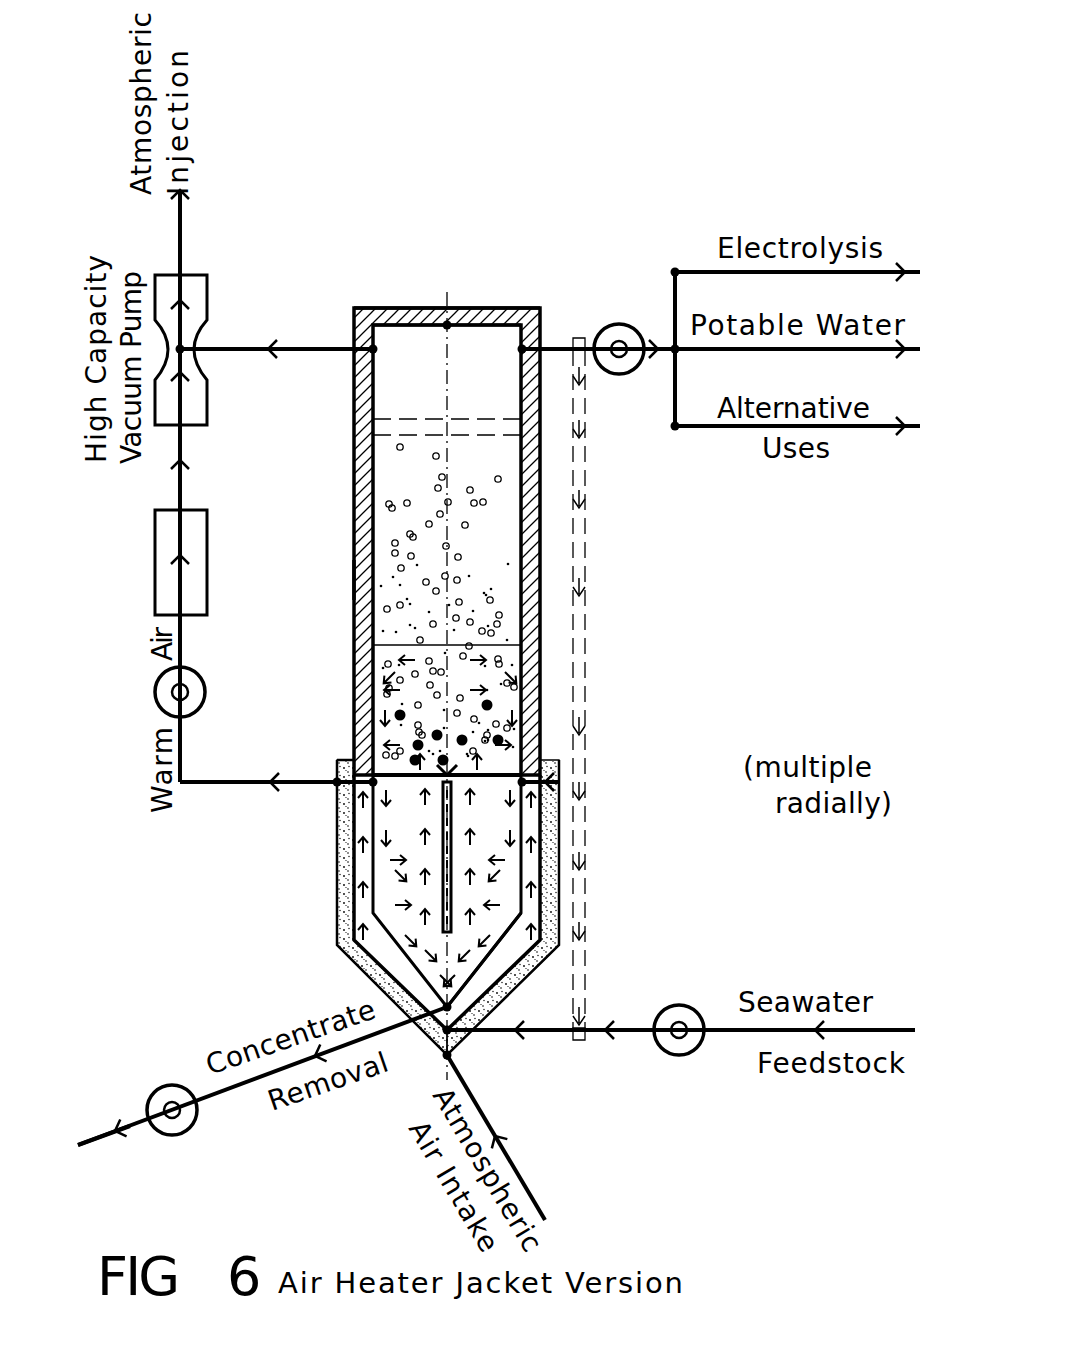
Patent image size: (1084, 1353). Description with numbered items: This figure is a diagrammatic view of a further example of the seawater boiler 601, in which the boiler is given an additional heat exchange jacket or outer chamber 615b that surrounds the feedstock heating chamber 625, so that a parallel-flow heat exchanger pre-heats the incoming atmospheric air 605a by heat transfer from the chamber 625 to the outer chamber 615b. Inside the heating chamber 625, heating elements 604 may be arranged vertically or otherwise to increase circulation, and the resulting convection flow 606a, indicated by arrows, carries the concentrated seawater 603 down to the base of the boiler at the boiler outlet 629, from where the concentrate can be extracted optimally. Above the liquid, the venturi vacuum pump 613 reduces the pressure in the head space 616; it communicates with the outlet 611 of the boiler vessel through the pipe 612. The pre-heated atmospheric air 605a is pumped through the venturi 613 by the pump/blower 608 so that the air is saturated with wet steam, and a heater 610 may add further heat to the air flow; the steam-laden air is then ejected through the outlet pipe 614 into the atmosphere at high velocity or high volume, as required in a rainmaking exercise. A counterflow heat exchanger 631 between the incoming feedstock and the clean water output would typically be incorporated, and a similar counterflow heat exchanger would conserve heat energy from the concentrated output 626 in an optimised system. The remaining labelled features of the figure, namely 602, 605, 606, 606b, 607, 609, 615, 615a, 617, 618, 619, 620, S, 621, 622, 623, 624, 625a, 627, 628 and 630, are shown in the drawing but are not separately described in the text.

The seawater boiler 601 is at (383, 285).
The seawater feedstock pump 602 is at (679, 1056).
The concentrated seawater 603 is at (380, 978).
The heating elements 604 is at (450, 857).
The atmospheric air intake line 605 is at (504, 1145).
The atmospheric air 605a is at (353, 865).
The annular air passage 606 is at (410, 820).
The convection flow 606a is at (413, 876).
The jacket upper outlet 606b is at (353, 738).
The warm air line 607 is at (279, 796).
The pump/blower 608 is at (195, 673).
The vessel wall 609 is at (353, 575).
The heater 610 is at (207, 542).
The outlet 611 is at (353, 367).
The pipe 612 is at (261, 335).
The venturi vacuum pump 613 is at (210, 323).
The outlet pipe 614 is at (214, 475).
The vessel lid 615 is at (418, 308).
The inner vessel 615a is at (540, 847).
The heat exchange jacket 615b is at (545, 960).
The head space 616 is at (460, 350).
The inner lid surface 617 is at (508, 308).
The potable water pump 618 is at (608, 325).
The vapor bubbles 619 is at (535, 485).
The suspended particles 620 is at (380, 715).
The liquid surface S is at (440, 700).
The concentrate particles 621 is at (480, 715).
The circulation flow 622 is at (500, 720).
The distribution plate 623 is at (447, 773).
The radial warm air inlets 624 is at (522, 782).
The feedstock heating chamber 625 is at (533, 875).
The annular air passage right 625a is at (535, 923).
The concentrated output 626 is at (109, 1149).
The concentrate pump 627 is at (167, 1086).
The concentrate removal line 628 is at (223, 1093).
The boiler outlet 629 is at (449, 1058).
The seawater inlet junction 630 is at (449, 1032).
The counterflow heat exchanger 631 is at (574, 992).